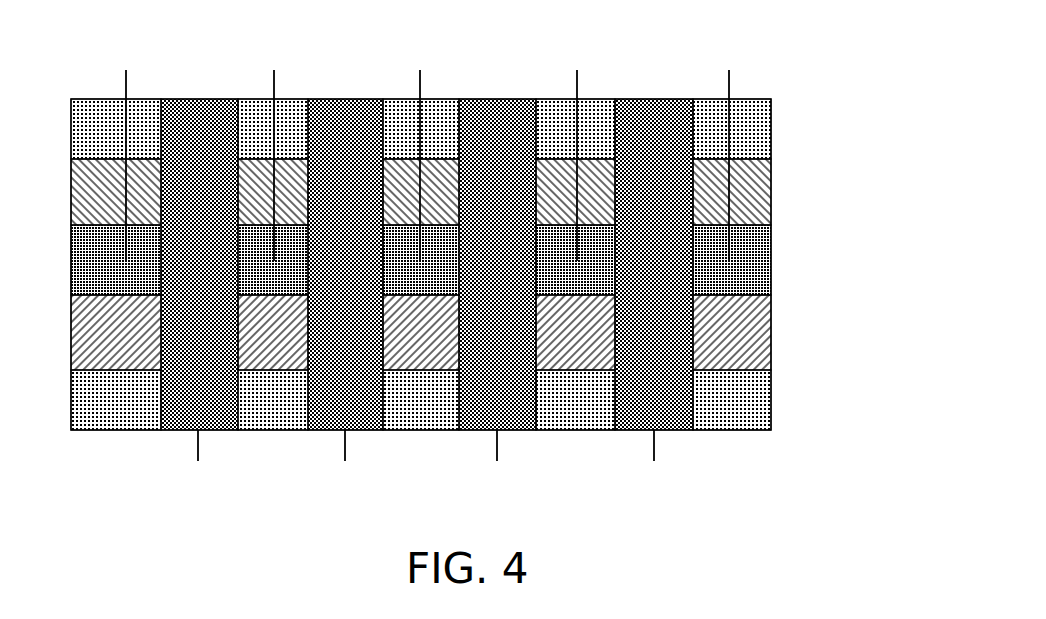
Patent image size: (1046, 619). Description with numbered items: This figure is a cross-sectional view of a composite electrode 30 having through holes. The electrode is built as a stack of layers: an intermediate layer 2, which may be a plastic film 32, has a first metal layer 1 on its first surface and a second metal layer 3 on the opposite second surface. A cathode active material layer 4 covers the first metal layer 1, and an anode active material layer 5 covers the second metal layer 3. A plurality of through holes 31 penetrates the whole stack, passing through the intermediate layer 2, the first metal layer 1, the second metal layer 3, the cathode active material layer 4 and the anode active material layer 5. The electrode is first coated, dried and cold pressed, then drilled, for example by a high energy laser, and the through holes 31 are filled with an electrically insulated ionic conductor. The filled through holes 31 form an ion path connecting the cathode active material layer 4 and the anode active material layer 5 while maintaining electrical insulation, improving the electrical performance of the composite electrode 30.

The composite electrode 30 is at (423, 503).
The cathode active material layer 4 is at (763, 91).
The first metal layer 1 is at (763, 151).
The intermediate layer 2 is at (763, 217).
The second metal layer 3 is at (763, 287).
The anode active material layer 5 is at (763, 362).
The plastic film 32 is at (118, 62).
The through hole 31 is at (190, 453).